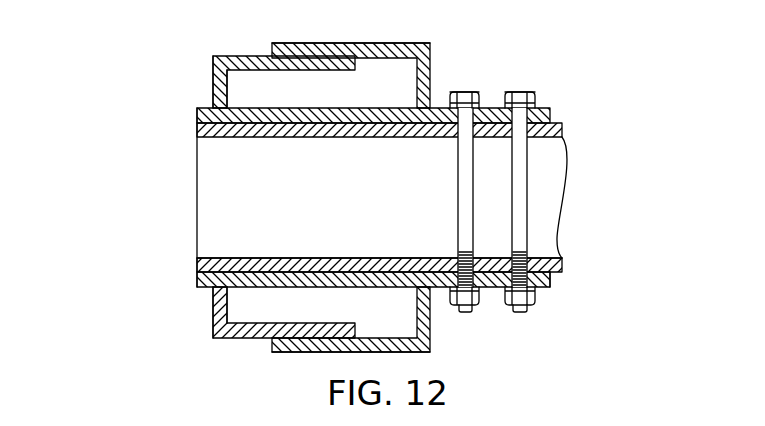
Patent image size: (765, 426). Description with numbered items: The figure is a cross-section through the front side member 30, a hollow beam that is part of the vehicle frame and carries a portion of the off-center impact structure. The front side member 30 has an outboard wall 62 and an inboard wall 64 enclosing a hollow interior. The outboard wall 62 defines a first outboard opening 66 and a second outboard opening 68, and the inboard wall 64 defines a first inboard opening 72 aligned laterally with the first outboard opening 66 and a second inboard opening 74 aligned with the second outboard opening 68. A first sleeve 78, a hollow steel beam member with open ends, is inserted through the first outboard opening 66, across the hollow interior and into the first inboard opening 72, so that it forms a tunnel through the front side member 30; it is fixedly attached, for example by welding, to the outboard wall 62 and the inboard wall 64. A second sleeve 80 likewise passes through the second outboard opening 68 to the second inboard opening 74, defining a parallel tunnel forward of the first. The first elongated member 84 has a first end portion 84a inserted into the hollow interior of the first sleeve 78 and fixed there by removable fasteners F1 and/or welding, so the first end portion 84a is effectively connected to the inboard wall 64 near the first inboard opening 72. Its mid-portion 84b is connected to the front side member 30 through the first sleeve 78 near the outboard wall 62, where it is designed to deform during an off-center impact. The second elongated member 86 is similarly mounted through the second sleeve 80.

The front side member 30 is at (297, 43).
The outboard wall 62 is at (330, 90).
The inboard wall 64 is at (213, 72).
The first outboard opening 66 is at (492, 218).
The second outboard opening 68 is at (462, 250).
The first inboard opening 72 is at (340, 197).
The second inboard opening 74 is at (220, 137).
The first sleeve 78 is at (325, 168).
The second sleeve 80 is at (370, 107).
The first elongated member 84 is at (418, 197).
The second elongated member 86 is at (551, 123).
The first end portion 84a is at (278, 262).
The mid-portion 84b is at (556, 273).
The removable fasteners F1 is at (467, 92).